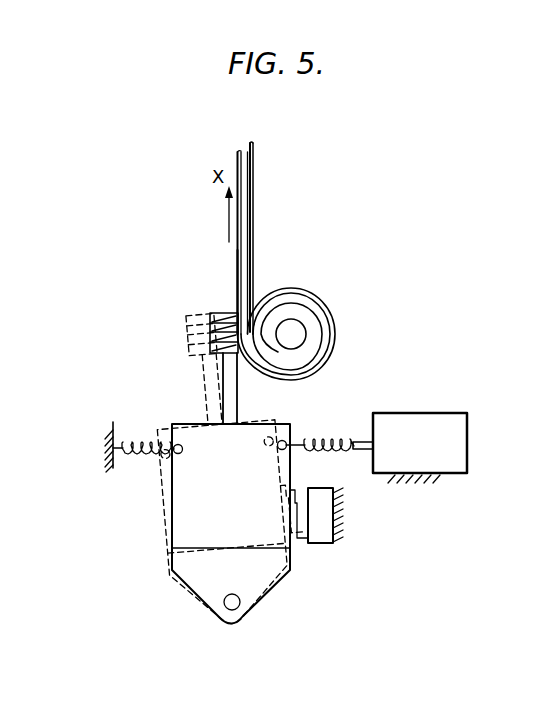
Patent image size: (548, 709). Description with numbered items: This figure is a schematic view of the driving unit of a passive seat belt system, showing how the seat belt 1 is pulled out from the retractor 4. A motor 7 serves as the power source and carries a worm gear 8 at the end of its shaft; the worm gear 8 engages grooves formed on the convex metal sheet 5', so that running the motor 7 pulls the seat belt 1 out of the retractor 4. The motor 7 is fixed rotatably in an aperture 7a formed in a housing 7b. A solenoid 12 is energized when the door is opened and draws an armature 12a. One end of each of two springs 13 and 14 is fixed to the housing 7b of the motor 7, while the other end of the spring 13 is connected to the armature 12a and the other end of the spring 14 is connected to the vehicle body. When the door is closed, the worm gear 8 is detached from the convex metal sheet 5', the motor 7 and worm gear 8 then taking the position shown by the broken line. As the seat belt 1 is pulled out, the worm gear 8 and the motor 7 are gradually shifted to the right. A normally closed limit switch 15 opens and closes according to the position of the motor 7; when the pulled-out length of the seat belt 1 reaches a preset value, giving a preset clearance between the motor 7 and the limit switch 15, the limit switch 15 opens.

The seat belt 1 is at (253, 255).
The convex metal sheet 5' is at (214, 292).
The retractor 4 is at (307, 312).
The worm gear 8 is at (200, 338).
The motor 7 is at (291, 548).
The aperture 7a is at (246, 606).
The housing 7b is at (172, 536).
The solenoid 12 is at (421, 476).
The armature 12a is at (367, 442).
The spring 13 is at (320, 438).
The spring 14 is at (141, 454).
The limit switch 15 is at (336, 523).